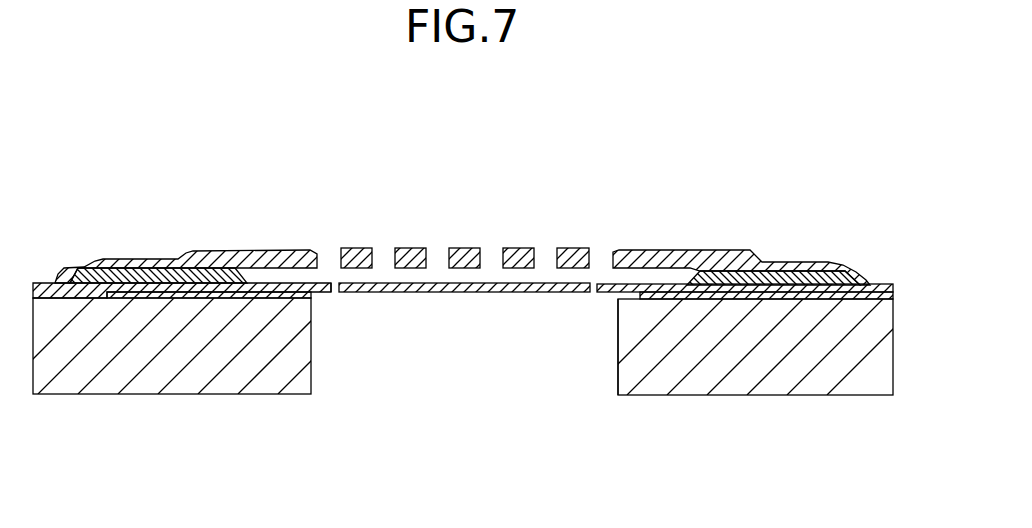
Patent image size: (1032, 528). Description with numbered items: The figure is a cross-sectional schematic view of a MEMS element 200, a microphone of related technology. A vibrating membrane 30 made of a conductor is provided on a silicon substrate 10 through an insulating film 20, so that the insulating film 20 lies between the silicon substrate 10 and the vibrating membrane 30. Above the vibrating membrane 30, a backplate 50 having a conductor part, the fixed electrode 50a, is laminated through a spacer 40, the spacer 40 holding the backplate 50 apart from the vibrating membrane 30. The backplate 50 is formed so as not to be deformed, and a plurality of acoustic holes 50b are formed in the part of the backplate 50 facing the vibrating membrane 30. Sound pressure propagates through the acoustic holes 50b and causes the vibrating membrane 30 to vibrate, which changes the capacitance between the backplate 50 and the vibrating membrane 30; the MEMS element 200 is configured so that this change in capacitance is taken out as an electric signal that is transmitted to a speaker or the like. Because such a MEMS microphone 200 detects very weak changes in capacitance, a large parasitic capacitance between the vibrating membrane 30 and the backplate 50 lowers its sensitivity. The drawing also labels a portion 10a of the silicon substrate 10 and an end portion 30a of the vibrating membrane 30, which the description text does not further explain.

The MEMS element 200 is at (782, 147).
The silicon substrate 10 is at (694, 385).
The side surface of substrate 10a is at (617, 345).
The insulating film 20 is at (805, 300).
The vibrating membrane 30 is at (459, 293).
The end portion of piezoelectric layer 30a is at (335, 294).
The spacer 40 is at (872, 280).
The backplate 50 is at (814, 266).
The fixed electrode 50a is at (567, 249).
The acoustic hole 50b is at (384, 258).